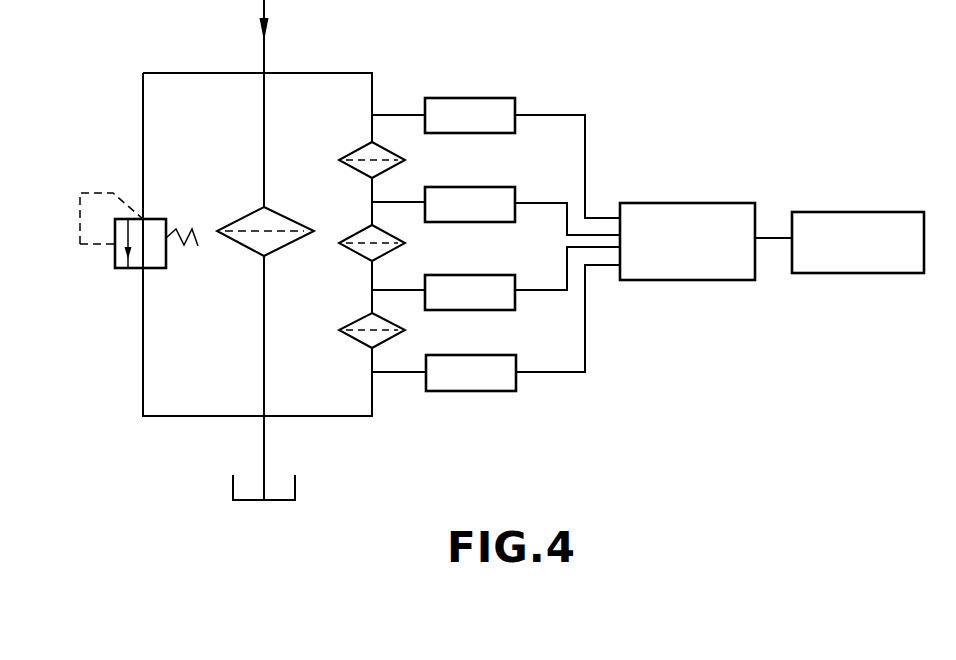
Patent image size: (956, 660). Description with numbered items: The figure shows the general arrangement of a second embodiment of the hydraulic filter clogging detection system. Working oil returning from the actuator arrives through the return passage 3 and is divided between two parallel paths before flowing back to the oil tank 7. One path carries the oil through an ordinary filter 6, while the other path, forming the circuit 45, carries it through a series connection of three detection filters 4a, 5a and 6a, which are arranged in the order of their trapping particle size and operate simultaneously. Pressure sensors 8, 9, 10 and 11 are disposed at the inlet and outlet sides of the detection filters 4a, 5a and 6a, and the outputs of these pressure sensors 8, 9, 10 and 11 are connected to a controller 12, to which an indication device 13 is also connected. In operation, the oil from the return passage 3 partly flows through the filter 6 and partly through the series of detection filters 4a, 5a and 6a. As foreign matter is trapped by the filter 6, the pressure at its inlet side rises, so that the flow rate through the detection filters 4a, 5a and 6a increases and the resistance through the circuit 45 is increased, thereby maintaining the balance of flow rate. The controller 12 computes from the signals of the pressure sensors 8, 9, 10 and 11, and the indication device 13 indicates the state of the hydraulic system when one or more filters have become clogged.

The return passage 3 is at (264, 45).
The circuit 45 is at (358, 73).
The ordinary filter 6 is at (246, 218).
The detection filter 4a is at (352, 155).
The detection filter 5a is at (355, 238).
The detection filter 6a is at (352, 326).
The oil tank 7 is at (233, 486).
The pressure sensor 8 is at (495, 98).
The pressure sensor 9 is at (489, 187).
The pressure sensor 10 is at (488, 275).
The pressure sensor 11 is at (490, 355).
The controller 12 is at (703, 203).
The indication device 13 is at (865, 212).